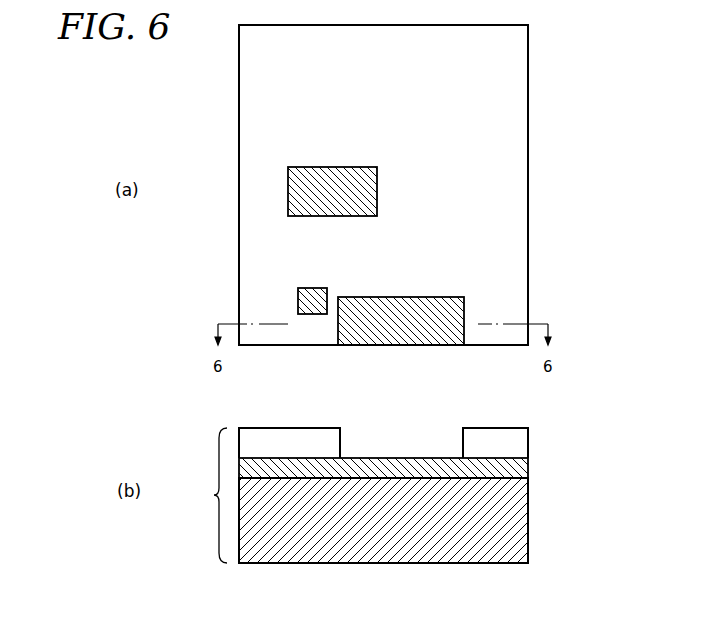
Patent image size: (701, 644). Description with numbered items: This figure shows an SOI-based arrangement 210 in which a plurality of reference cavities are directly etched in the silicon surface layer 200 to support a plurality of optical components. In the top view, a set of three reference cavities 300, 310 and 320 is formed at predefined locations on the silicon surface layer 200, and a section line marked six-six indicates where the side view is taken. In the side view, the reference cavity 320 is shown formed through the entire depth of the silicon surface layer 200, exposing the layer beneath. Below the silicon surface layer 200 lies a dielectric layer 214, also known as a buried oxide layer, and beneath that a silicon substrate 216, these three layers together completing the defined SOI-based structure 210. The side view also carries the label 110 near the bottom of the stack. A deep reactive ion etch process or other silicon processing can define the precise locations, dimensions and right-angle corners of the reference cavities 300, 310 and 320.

The substrate 110 is at (413, 535).
The silicon surface layer 200 is at (517, 245).
The SOI-based arrangement 210 is at (399, 308).
The dielectric layer 214 is at (517, 470).
The silicon substrate 216 is at (517, 520).
The reference cavity 300 is at (315, 288).
The reference cavity 310 is at (345, 173).
The reference cavity 320 is at (433, 297).